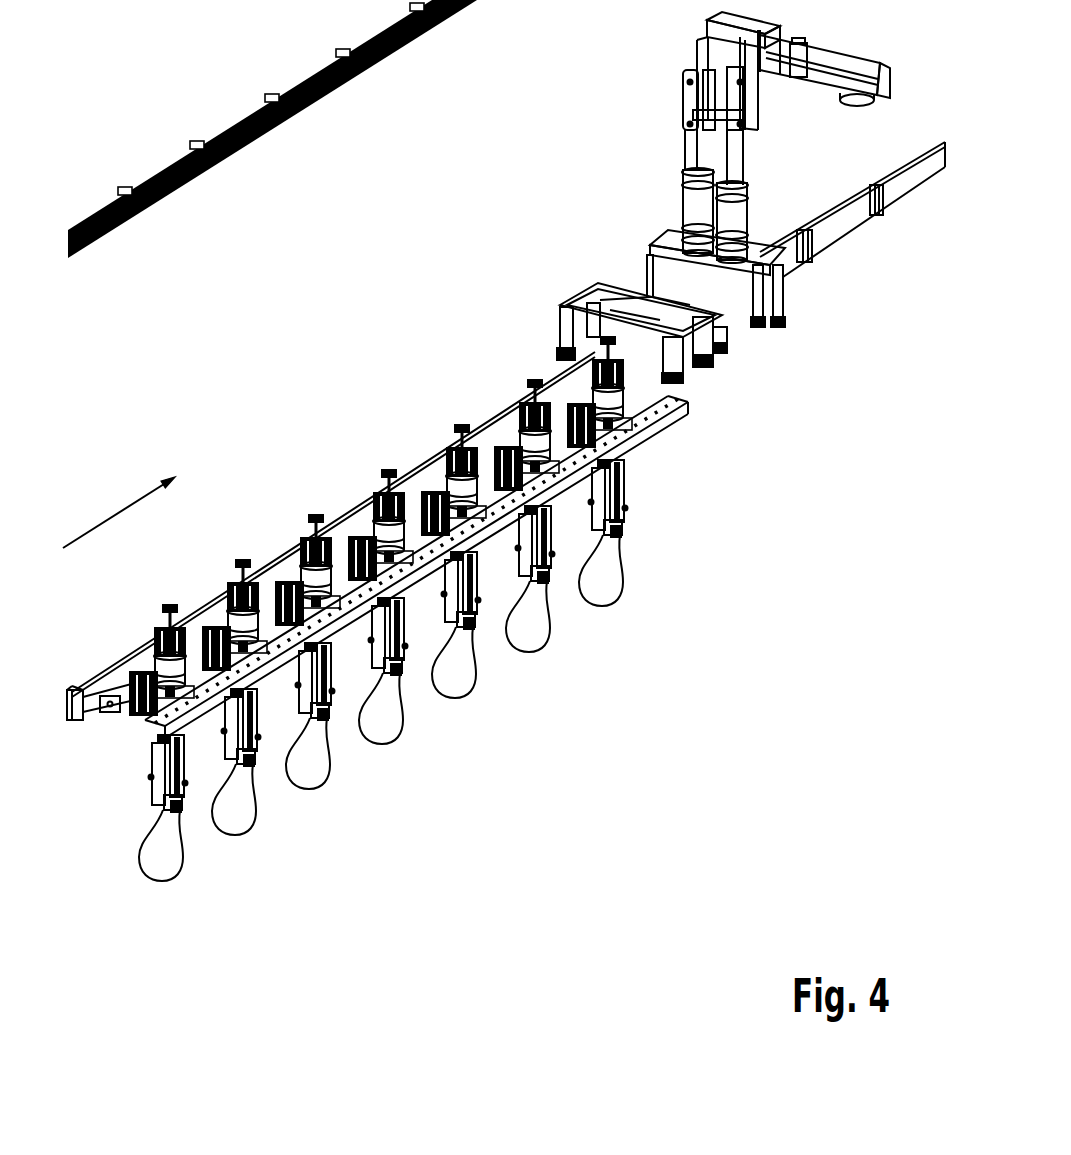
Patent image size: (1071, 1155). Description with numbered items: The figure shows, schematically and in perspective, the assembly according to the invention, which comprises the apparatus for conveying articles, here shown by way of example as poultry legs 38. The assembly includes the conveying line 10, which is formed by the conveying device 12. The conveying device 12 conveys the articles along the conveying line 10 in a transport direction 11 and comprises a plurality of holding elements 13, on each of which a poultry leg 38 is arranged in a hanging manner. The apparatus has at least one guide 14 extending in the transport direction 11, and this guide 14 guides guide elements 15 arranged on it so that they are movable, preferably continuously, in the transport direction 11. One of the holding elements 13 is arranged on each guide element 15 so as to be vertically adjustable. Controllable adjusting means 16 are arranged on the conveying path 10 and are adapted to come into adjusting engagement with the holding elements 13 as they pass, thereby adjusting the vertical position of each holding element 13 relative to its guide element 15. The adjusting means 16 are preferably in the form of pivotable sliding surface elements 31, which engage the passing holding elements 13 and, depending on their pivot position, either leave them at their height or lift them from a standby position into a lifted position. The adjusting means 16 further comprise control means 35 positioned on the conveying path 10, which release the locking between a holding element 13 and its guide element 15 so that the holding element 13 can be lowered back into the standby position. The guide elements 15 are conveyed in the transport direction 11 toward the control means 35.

The conveying line 10 is at (82, 425).
The transport direction 11 is at (93, 527).
The conveying device 12 is at (42, 695).
The holding element 13 is at (163, 780).
The guide 14 is at (120, 725).
The guide element 15 is at (170, 604).
The adjusting means 16 is at (642, 95).
The sliding surface element 31 is at (741, 372).
The control means 35 is at (610, 245).
The poultry leg 38 is at (163, 855).